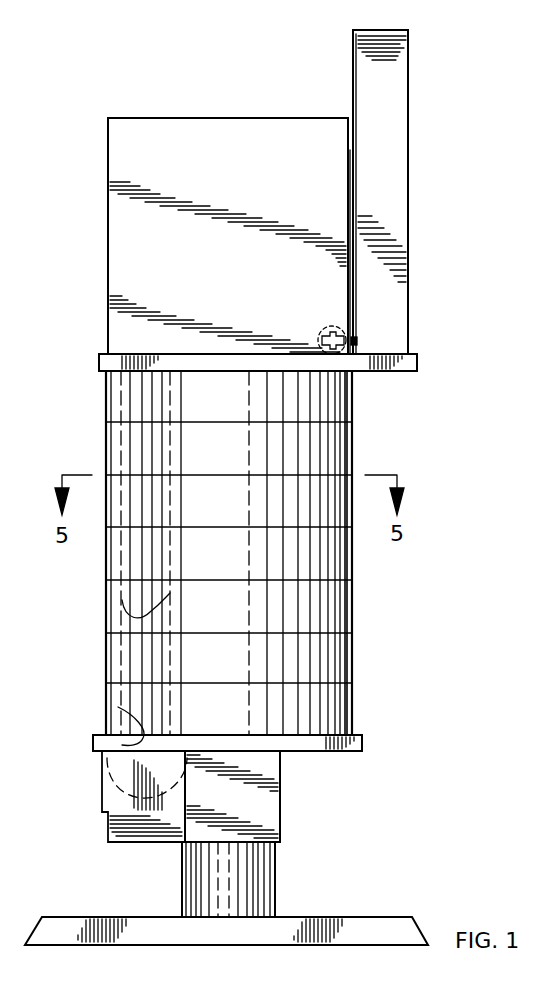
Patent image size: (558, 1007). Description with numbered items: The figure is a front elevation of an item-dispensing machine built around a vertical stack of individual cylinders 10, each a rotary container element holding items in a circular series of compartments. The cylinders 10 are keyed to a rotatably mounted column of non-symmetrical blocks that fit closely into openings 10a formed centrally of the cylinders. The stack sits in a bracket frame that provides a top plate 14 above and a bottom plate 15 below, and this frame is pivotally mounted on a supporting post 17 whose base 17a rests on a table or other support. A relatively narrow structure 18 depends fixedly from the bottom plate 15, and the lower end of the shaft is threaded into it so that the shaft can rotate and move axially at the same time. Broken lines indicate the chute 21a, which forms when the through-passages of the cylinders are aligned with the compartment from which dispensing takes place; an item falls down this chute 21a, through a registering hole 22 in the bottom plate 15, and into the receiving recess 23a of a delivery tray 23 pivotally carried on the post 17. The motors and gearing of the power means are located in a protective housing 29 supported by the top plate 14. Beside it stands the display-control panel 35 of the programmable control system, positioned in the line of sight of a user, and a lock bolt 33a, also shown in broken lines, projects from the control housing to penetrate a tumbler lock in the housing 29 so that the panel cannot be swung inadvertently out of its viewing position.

The cylinders 10 is at (355, 565).
The openings 10a is at (355, 402).
The top plate 14 is at (99, 363).
The bottom plate 15 is at (362, 745).
The supporting post 17 is at (271, 872).
The base 17a is at (393, 917).
The narrow structure 18 is at (280, 808).
The chute 21a is at (122, 605).
The registering hole 22 is at (118, 707).
The delivery tray 23 is at (107, 790).
The receiving recess 23a is at (100, 766).
The protective housing 29 is at (107, 262).
The lock bolt 33a is at (350, 337).
The display-control panel 35 is at (350, 67).